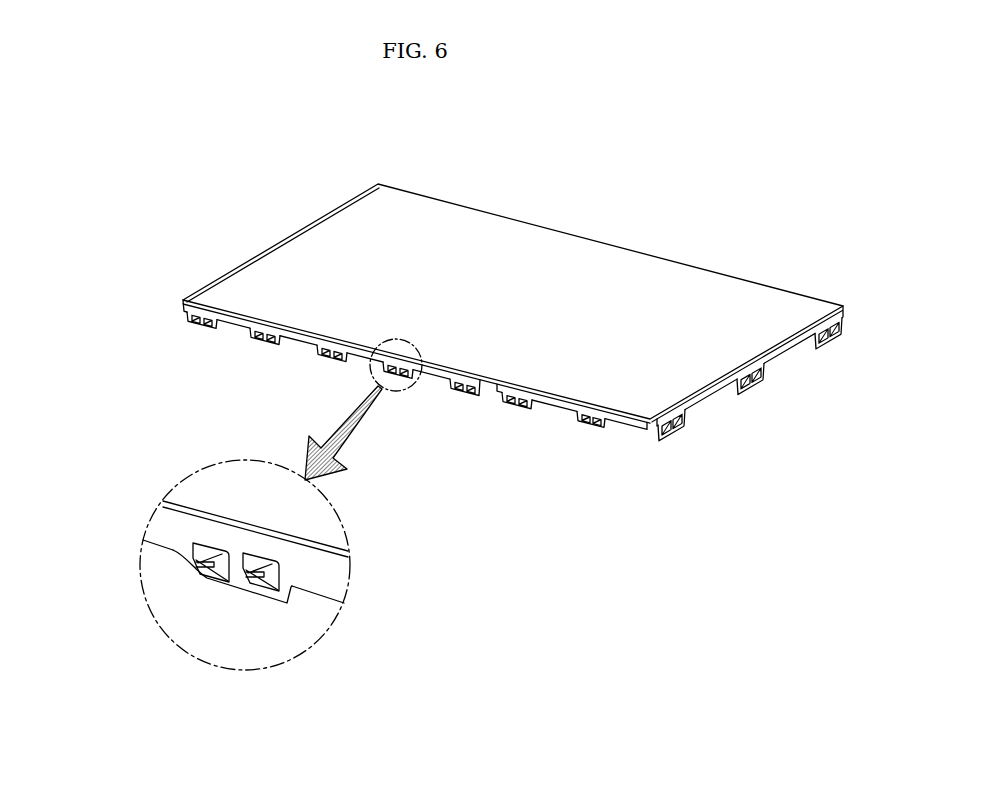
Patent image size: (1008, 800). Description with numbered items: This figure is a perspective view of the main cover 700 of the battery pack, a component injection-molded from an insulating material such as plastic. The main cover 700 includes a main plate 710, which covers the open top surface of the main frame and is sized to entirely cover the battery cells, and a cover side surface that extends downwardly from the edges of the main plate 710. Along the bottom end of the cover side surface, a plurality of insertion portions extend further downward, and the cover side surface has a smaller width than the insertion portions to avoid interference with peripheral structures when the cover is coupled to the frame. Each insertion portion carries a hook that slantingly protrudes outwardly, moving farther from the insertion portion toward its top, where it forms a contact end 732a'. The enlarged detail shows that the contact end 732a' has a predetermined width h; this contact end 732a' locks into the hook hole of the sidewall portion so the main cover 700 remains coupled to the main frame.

The main cover 700 is at (165, 140).
The main plate 710 is at (548, 238).
The contact end 732a' is at (169, 639).
The width h is at (220, 555).